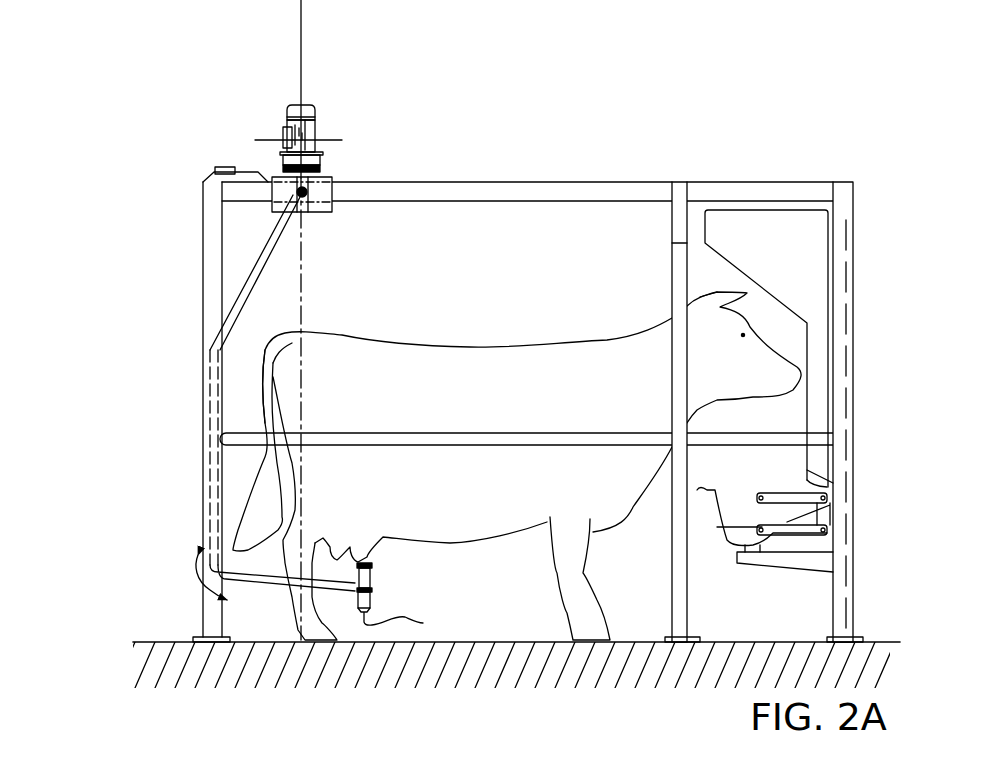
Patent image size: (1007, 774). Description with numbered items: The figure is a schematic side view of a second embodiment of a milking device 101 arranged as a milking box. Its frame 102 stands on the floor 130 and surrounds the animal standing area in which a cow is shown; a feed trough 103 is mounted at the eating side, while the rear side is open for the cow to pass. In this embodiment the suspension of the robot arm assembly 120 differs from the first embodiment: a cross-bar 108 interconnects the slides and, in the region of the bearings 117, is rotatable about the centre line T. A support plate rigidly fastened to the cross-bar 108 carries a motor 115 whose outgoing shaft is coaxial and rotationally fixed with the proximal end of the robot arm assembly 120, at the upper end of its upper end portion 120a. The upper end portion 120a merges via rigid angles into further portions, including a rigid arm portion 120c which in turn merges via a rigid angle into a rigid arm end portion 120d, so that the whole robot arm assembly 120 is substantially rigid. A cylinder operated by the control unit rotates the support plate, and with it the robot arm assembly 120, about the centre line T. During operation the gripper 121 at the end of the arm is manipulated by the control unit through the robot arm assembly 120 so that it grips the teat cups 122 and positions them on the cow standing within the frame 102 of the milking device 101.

The milking device 101 is at (643, 137).
The frame 102 is at (215, 247).
The feed trough 103 is at (765, 530).
The cross-bar 108 is at (333, 195).
The motor 115 is at (314, 130).
The bearings 117 is at (299, 191).
The robot arm assembly 120 is at (233, 317).
The upper end portion 120a is at (322, 170).
The rigid arm portion 120c is at (212, 462).
The rigid arm end portion 120d is at (268, 581).
The gripper 121 is at (372, 591).
The teat cups 122 is at (366, 575).
The floor 130 is at (557, 731).